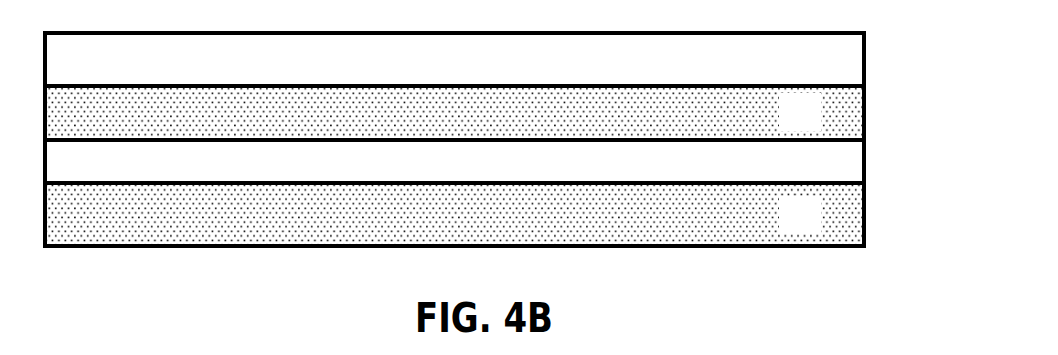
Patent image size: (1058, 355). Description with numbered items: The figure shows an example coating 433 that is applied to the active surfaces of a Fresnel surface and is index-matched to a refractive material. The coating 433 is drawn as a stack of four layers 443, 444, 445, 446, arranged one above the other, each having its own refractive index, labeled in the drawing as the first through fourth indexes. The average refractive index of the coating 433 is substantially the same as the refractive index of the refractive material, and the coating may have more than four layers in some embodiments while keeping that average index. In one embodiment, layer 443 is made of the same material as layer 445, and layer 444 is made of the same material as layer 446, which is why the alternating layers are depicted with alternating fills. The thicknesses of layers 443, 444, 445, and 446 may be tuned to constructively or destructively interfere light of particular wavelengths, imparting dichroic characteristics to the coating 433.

The coating 433 is at (503, 140).
The layer 443 is at (451, 72).
The layer 444 is at (451, 122).
The layer 445 is at (451, 172).
The layer 446 is at (451, 224).